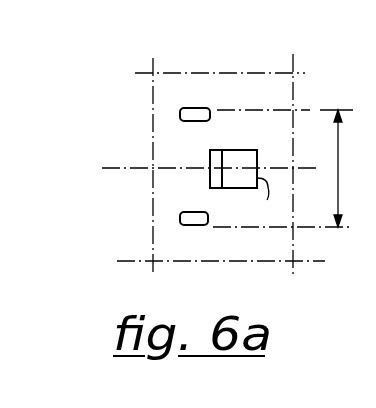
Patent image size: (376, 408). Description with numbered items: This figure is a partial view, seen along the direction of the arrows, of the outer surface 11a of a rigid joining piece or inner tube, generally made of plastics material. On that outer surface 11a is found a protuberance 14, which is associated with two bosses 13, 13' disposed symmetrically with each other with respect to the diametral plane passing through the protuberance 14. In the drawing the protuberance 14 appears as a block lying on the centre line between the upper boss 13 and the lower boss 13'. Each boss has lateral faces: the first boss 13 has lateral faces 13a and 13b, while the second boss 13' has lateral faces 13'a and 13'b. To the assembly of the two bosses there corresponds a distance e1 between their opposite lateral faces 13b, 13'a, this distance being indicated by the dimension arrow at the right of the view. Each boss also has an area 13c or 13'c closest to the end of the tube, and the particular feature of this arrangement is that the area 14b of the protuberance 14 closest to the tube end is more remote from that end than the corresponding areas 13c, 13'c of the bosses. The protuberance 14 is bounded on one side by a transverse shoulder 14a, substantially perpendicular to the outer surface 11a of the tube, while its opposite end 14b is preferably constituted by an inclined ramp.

The outer surface 11a is at (189, 183).
The boss 13 is at (182, 79).
The lateral face of boss 13a is at (186, 121).
The lateral face of boss 13b is at (203, 108).
The area of boss 13c is at (180, 113).
The boss 13' is at (168, 256).
The lateral face of boss 13'a is at (202, 262).
The lateral face of boss 13'b is at (122, 217).
The area of boss 13'c is at (135, 236).
The protuberance 14 is at (237, 157).
The transverse shoulder 14a is at (254, 203).
The inclined ramp 14b is at (210, 164).
The distance e1 is at (344, 168).